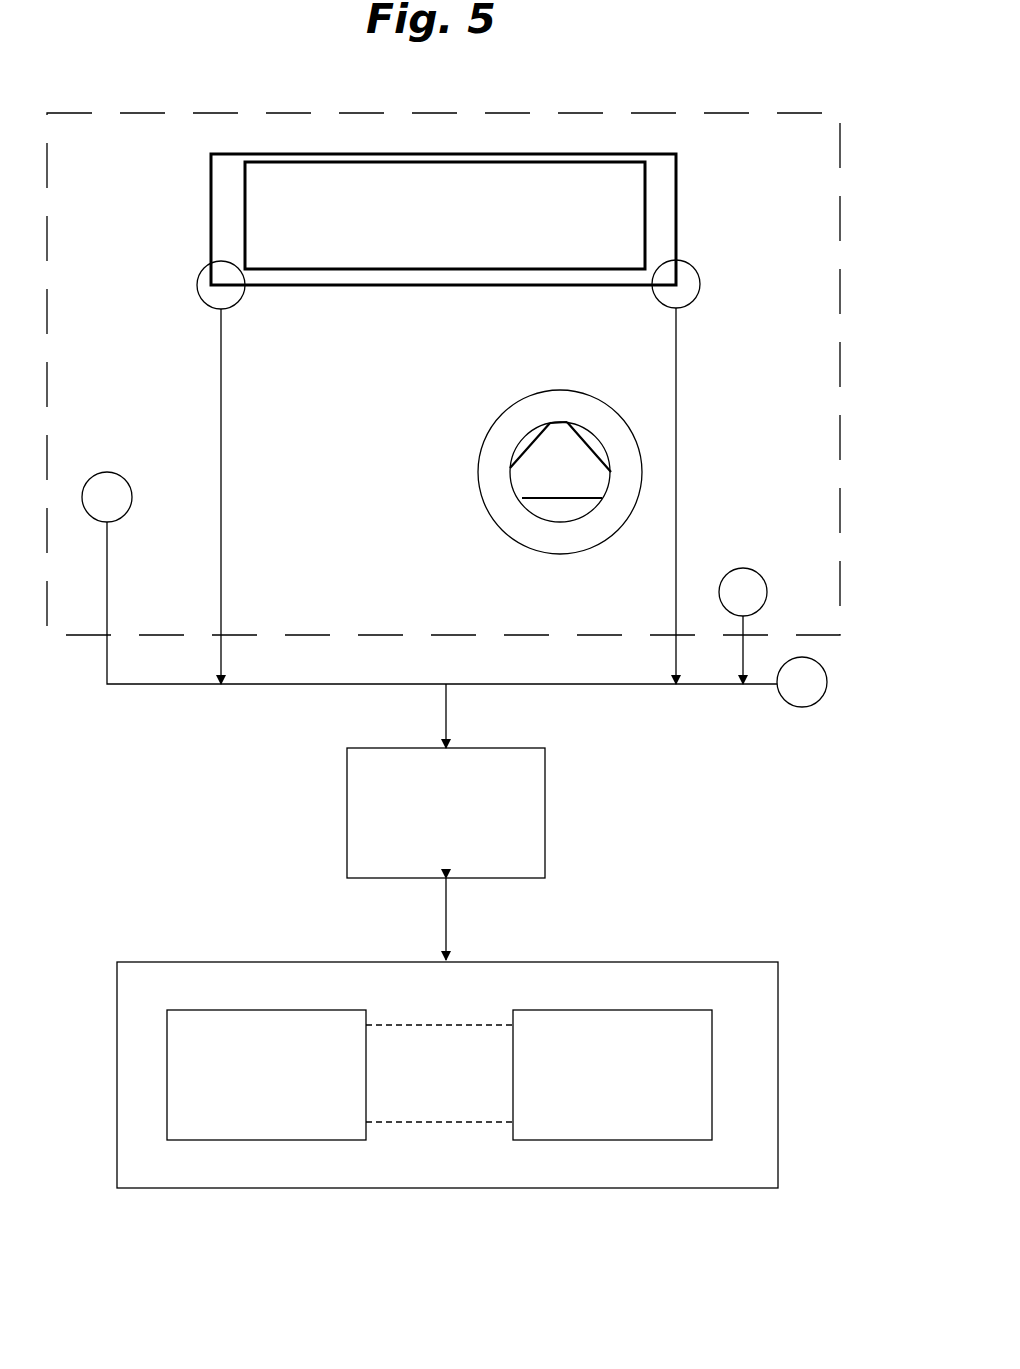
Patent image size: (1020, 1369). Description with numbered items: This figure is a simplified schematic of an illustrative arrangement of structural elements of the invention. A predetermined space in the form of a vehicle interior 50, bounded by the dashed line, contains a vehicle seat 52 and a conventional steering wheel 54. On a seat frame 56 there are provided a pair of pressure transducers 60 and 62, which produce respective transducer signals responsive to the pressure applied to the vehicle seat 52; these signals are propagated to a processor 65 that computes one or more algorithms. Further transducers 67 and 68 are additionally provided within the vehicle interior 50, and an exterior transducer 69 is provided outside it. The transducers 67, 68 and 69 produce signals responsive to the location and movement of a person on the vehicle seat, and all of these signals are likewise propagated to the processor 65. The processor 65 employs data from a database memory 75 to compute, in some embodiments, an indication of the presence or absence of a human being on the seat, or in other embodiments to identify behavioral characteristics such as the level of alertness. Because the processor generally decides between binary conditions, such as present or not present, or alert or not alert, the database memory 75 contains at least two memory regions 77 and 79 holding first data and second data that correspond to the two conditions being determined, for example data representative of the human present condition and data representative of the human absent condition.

The vehicle interior 50 is at (122, 138).
The vehicle seat 52 is at (530, 243).
The steering wheel 54 is at (491, 448).
The seat frame 56 is at (676, 226).
The pressure transducer 60 is at (216, 294).
The pressure transducer 62 is at (690, 297).
The processor 65 is at (523, 822).
The transducer 67 is at (103, 497).
The transducer 68 is at (733, 584).
The exterior transducer 69 is at (805, 697).
The database memory 75 is at (487, 990).
The memory region 77 is at (221, 1038).
The memory region 79 is at (627, 1027).